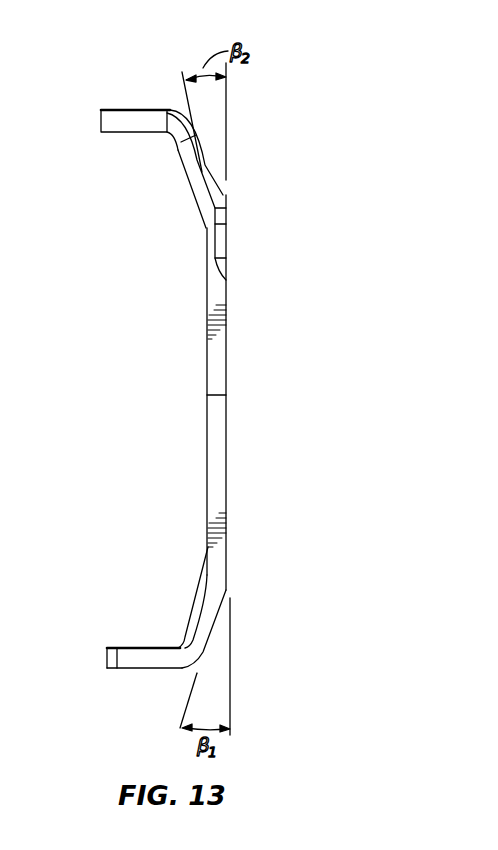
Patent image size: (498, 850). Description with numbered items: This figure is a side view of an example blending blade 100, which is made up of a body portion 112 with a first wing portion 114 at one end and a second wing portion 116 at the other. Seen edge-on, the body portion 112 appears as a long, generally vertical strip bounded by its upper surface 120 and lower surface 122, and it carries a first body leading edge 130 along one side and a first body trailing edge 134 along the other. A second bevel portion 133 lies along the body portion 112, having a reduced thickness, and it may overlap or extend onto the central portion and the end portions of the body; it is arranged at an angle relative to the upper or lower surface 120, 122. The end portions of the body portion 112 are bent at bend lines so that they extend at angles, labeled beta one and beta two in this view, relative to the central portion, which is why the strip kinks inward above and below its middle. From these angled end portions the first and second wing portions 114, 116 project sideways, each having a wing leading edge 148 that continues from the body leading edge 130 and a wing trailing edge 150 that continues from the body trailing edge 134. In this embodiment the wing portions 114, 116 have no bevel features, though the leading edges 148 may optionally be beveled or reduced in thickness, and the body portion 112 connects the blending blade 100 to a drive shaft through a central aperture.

The blending blade 100 is at (155, 383).
The body portion 112 is at (236, 422).
The first wing portion 114 is at (122, 96).
The second wing portion 116 is at (150, 641).
The upper surface 120 is at (208, 497).
The lower surface 122 is at (228, 490).
The first body leading edge 130 is at (195, 178).
The second bevel portion 133 is at (218, 233).
The first body trailing edge 134 is at (220, 582).
The wing leading edge 148 is at (140, 121).
The wing trailing edge 150 is at (157, 658).